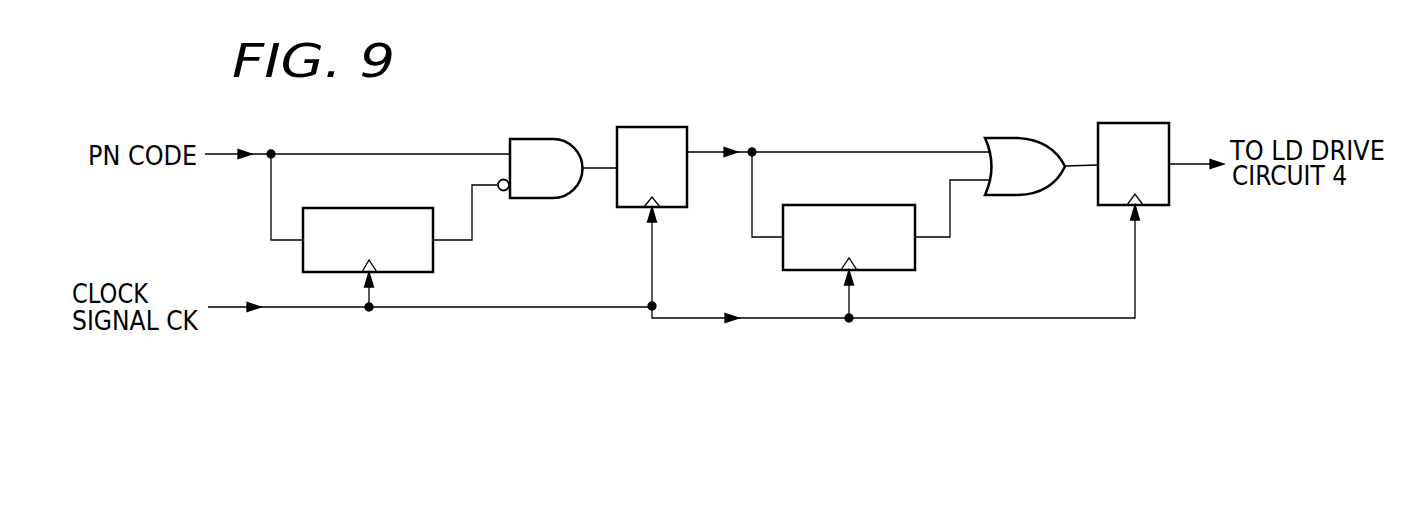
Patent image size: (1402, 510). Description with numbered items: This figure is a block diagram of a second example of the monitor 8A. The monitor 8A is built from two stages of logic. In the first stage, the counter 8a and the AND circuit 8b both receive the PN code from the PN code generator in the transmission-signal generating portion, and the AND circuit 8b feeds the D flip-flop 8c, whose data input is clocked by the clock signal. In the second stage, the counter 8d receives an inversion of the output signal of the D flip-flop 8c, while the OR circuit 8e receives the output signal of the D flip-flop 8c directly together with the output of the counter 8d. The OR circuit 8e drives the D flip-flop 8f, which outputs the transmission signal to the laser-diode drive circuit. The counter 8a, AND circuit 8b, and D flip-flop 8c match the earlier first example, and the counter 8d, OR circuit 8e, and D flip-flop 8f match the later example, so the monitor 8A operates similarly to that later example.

The monitor 8A is at (947, 64).
The counter 8a is at (388, 207).
The AND circuit 8b is at (540, 138).
The D flip-flop 8c is at (655, 125).
The counter 8d is at (870, 203).
The OR circuit 8e is at (1022, 137).
The D flip-flop 8f is at (1138, 122).